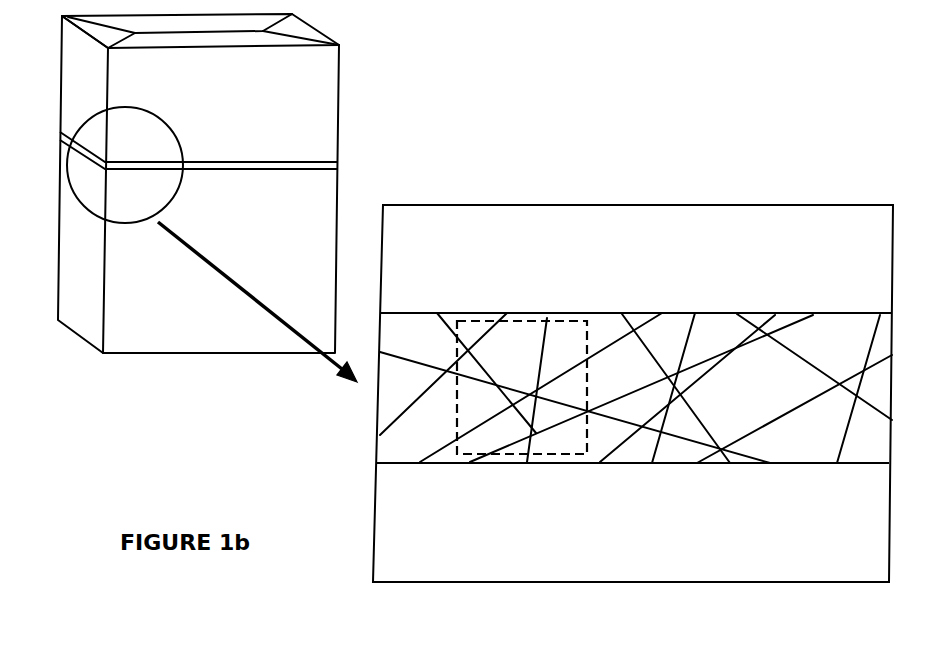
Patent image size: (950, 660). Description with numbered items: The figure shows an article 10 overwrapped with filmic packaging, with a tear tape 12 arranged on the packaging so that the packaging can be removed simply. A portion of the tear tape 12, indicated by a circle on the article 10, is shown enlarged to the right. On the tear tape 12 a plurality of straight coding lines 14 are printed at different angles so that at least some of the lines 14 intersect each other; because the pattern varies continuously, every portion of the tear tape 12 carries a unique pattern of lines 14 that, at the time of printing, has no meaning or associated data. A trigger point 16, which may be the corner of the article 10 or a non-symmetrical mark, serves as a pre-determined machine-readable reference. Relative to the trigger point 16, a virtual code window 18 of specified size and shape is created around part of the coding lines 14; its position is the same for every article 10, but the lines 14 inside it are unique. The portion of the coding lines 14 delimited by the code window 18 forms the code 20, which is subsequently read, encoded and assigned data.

The article 10 is at (155, 320).
The tear tape 12 is at (334, 157).
The coding lines 14 is at (632, 323).
The trigger point 16 is at (104, 170).
The code window 18 is at (487, 321).
The code 20 is at (549, 440).